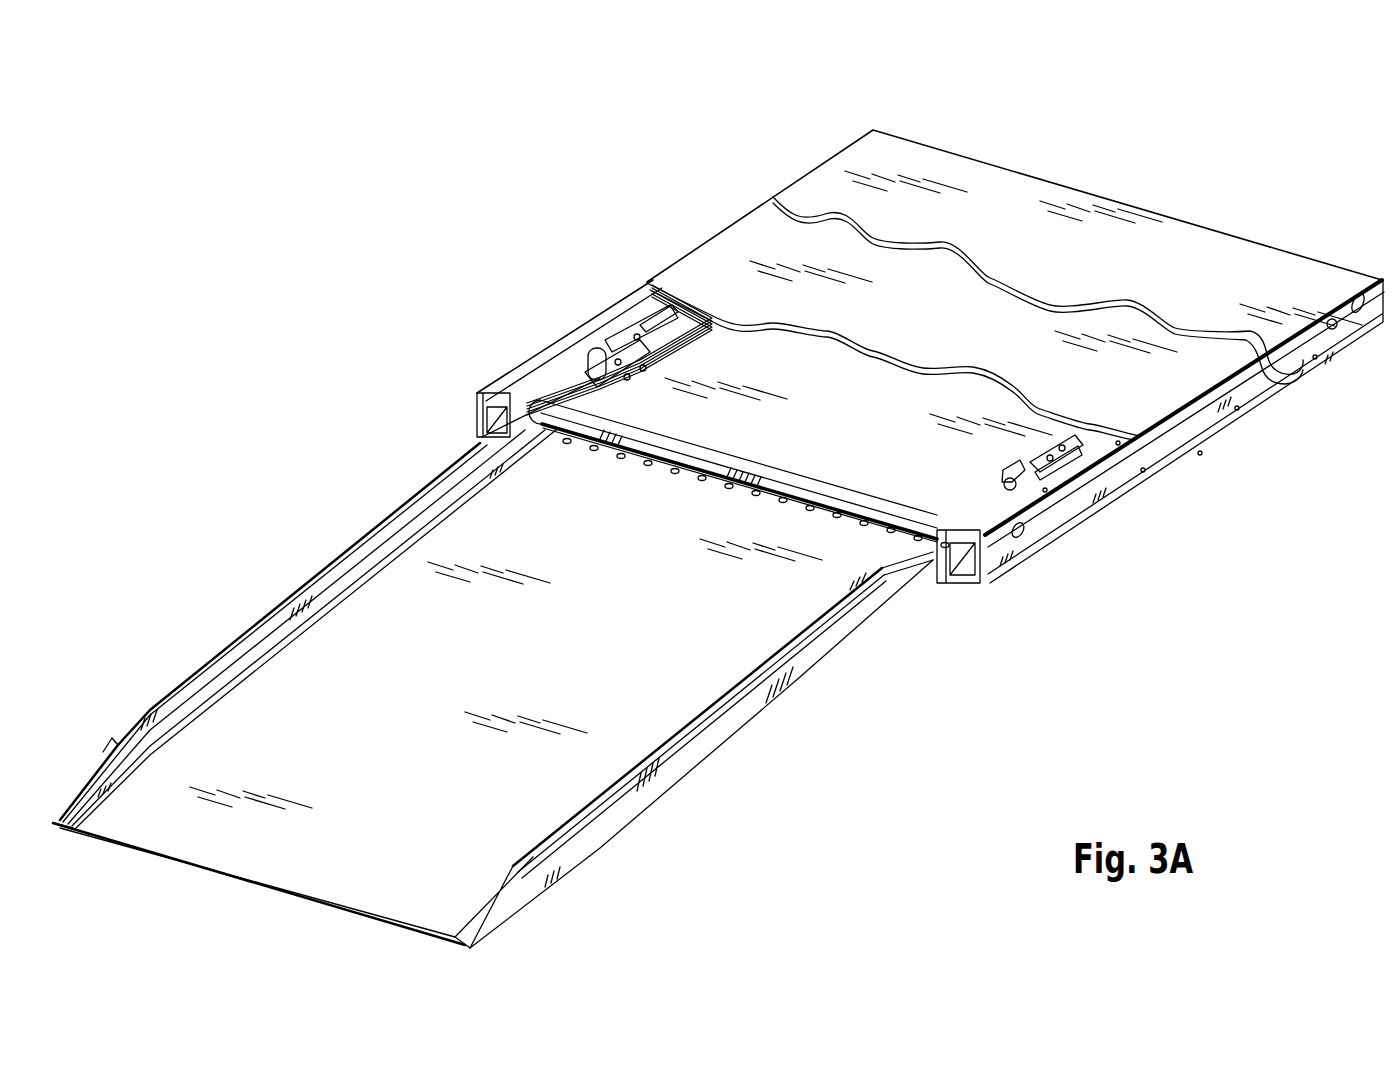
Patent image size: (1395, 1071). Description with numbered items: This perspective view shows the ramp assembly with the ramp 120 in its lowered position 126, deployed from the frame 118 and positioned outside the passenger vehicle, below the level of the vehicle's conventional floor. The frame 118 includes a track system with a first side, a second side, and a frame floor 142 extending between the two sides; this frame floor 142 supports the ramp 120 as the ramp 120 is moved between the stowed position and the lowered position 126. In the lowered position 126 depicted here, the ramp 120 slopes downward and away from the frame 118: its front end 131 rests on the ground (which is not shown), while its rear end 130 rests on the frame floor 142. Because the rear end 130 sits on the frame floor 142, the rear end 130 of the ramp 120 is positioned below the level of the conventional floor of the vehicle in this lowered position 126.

The lowered position 126 is at (1153, 143).
The frame floor 142 is at (867, 425).
The frame 118 is at (1058, 515).
The rear end 130 is at (838, 495).
The ramp 120 is at (367, 627).
The front end 131 is at (253, 882).